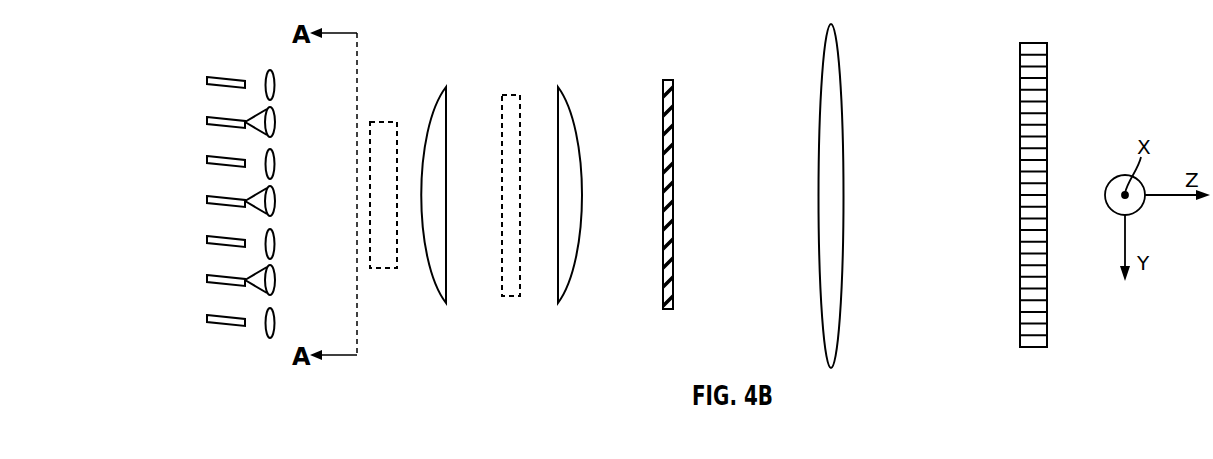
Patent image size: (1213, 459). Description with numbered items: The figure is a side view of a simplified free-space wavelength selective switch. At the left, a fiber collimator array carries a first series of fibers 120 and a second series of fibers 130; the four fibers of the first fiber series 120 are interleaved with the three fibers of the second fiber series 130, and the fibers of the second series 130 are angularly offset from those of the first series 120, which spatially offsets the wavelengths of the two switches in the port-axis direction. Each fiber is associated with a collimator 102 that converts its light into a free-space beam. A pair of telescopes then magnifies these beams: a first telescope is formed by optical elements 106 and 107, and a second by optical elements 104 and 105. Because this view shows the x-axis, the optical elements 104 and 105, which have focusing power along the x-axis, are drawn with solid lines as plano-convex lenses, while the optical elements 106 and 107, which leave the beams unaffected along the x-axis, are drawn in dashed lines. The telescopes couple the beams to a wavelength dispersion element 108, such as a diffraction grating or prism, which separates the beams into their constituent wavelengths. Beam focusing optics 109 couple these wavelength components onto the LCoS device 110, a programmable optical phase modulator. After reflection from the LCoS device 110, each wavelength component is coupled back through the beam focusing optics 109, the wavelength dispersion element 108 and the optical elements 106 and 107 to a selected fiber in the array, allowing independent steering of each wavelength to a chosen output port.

The collimator 102 is at (270, 70).
The optical element 104 is at (445, 86).
The optical element 105 is at (560, 86).
The optical element 106 is at (383, 120).
The optical element 107 is at (514, 93).
The wavelength dispersion element 108 is at (668, 80).
The beam focusing optics 109 is at (822, 57).
The LCoS device 110 is at (1033, 43).
The first series of fibers 120 is at (207, 319).
The second series of fibers 130 is at (207, 279).